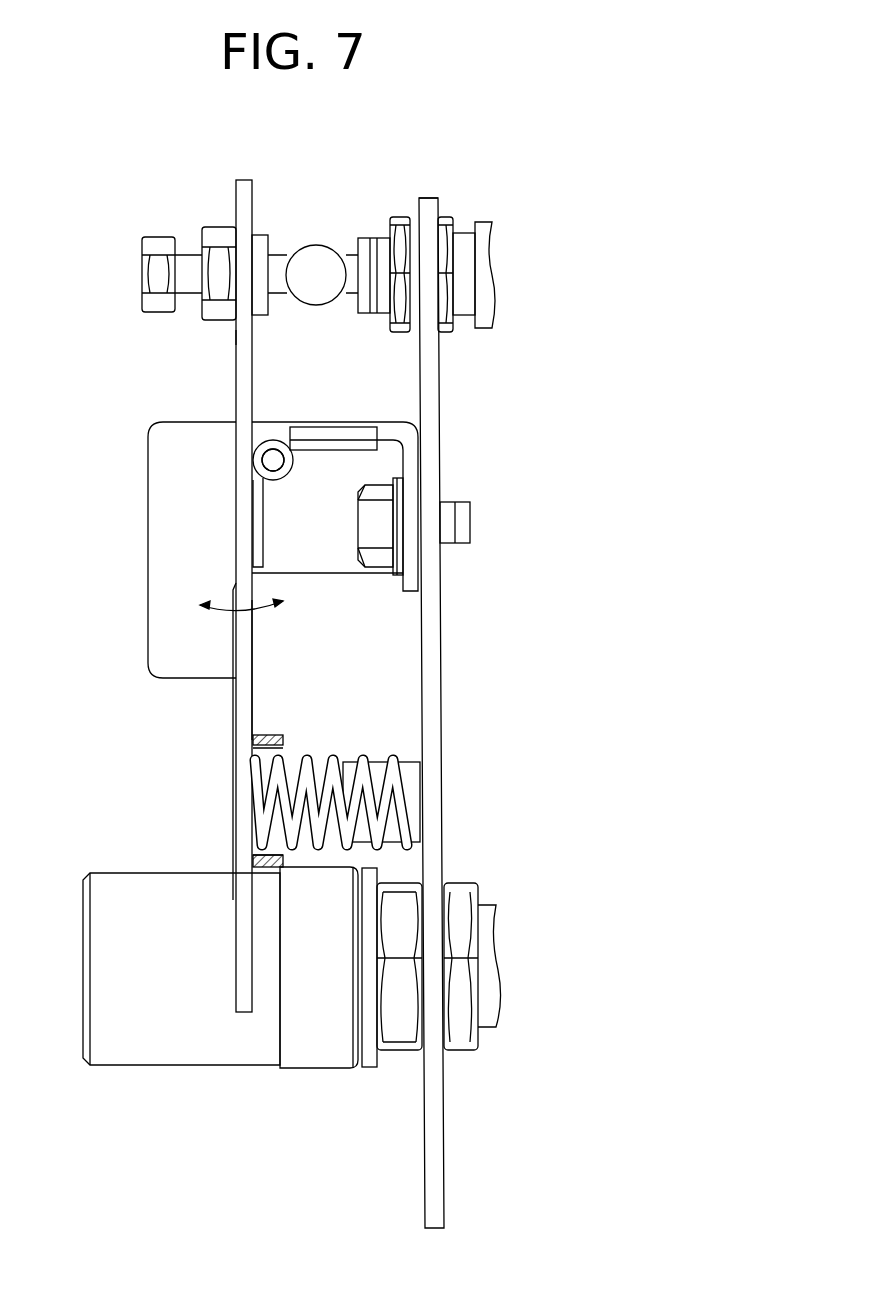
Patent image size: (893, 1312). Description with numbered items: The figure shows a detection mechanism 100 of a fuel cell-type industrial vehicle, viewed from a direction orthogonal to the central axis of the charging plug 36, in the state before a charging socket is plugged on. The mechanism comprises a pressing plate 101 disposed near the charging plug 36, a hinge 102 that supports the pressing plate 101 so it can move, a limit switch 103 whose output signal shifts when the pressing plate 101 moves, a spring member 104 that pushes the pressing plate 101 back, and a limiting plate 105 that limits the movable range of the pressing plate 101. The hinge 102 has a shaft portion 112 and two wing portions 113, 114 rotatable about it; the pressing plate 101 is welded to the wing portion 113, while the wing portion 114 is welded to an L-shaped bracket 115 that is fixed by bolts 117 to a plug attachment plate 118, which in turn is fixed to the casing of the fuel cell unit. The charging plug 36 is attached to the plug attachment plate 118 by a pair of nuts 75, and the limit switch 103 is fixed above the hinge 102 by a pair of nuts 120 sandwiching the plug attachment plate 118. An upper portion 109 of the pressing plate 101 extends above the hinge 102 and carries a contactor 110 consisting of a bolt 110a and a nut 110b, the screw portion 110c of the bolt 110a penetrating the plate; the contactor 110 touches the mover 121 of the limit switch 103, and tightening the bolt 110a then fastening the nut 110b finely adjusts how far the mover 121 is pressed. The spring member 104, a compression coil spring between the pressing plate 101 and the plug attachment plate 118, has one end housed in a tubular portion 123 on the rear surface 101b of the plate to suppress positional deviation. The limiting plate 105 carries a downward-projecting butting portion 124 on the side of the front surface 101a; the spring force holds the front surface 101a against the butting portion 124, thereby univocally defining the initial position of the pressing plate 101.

The charging plug 36 is at (213, 1050).
The pair of nuts 75 is at (397, 1033).
The detection mechanism 100 is at (583, 660).
The pressing plate 101 is at (243, 702).
The front surface 101a is at (235, 686).
The rear surface 101b is at (257, 665).
The hinge 102 is at (273, 442).
The limit switch 103 is at (363, 238).
The spring member 104 is at (403, 780).
The limiting plate 105 is at (148, 447).
The upper portion 109 is at (235, 338).
The contactor 110 is at (178, 232).
The bolt 110a is at (158, 243).
The nut 110b is at (218, 234).
The screw portion 110c is at (283, 257).
The shaft portion 112 is at (273, 460).
The wing portion 113 is at (262, 523).
The wing portion 114 is at (357, 445).
The bracket 115 is at (381, 428).
The bolts 117 is at (383, 552).
The plug attachment plate 118 is at (427, 615).
The pair of nuts 120 is at (398, 320).
The mover 121 is at (320, 246).
The tubular portion 123 is at (272, 732).
The butting portion 124 is at (168, 645).